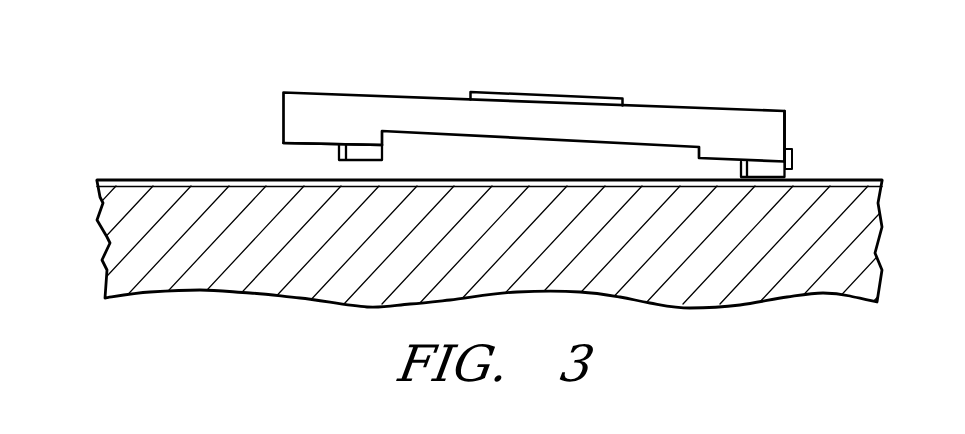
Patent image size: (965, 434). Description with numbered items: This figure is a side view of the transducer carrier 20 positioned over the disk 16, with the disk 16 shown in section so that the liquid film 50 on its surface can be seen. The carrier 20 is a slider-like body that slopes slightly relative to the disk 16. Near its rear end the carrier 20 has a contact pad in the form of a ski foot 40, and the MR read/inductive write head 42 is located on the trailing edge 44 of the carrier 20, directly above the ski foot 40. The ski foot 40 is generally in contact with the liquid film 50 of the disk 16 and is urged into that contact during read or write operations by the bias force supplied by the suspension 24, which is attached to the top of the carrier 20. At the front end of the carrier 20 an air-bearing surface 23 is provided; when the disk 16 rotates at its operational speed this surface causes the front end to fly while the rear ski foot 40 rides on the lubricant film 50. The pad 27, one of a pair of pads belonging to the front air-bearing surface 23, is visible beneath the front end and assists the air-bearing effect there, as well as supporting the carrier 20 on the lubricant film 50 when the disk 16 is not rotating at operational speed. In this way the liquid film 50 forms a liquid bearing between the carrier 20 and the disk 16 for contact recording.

The disk 16 is at (128, 267).
The liquid film 50 is at (150, 178).
The transducer carrier 20 is at (659, 84).
The suspension 24 is at (540, 97).
The air-bearing surface 23 is at (287, 143).
The pad 27 is at (353, 160).
The trailing edge 44 is at (788, 118).
The MR read/inductive write head 42 is at (793, 158).
The ski foot 40 is at (765, 183).